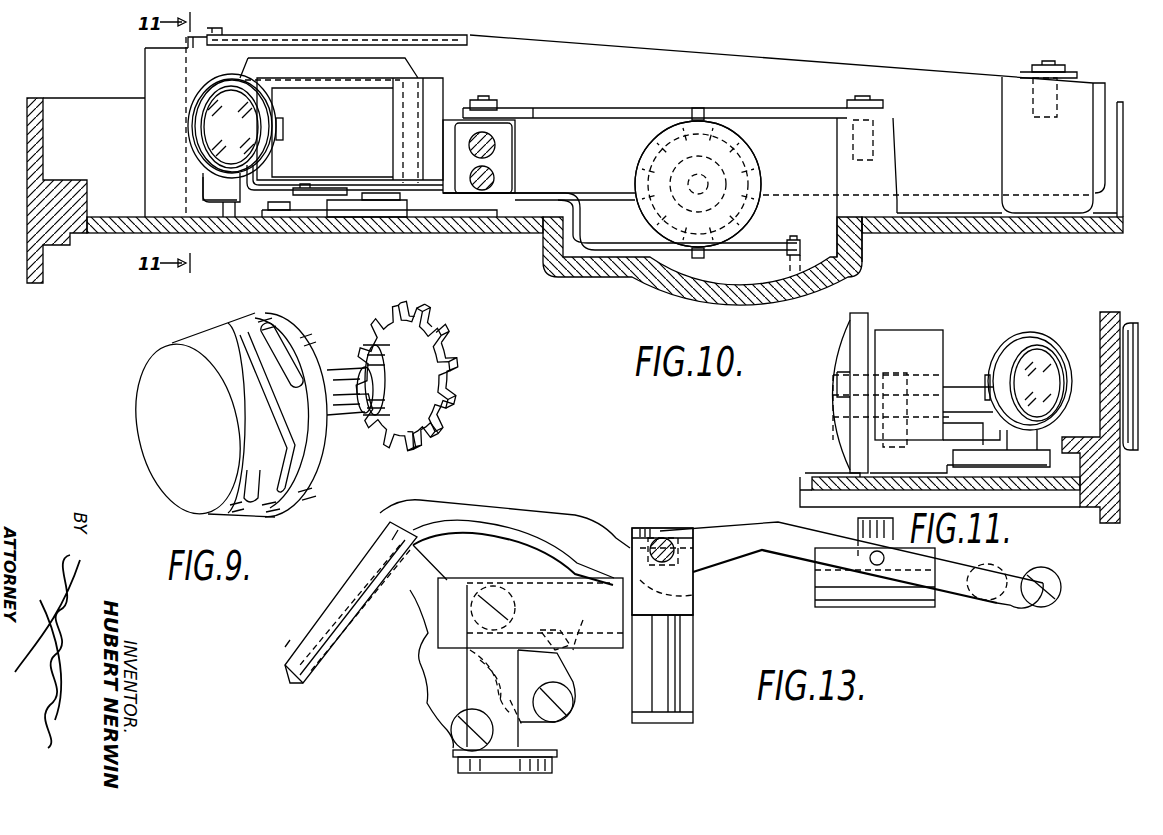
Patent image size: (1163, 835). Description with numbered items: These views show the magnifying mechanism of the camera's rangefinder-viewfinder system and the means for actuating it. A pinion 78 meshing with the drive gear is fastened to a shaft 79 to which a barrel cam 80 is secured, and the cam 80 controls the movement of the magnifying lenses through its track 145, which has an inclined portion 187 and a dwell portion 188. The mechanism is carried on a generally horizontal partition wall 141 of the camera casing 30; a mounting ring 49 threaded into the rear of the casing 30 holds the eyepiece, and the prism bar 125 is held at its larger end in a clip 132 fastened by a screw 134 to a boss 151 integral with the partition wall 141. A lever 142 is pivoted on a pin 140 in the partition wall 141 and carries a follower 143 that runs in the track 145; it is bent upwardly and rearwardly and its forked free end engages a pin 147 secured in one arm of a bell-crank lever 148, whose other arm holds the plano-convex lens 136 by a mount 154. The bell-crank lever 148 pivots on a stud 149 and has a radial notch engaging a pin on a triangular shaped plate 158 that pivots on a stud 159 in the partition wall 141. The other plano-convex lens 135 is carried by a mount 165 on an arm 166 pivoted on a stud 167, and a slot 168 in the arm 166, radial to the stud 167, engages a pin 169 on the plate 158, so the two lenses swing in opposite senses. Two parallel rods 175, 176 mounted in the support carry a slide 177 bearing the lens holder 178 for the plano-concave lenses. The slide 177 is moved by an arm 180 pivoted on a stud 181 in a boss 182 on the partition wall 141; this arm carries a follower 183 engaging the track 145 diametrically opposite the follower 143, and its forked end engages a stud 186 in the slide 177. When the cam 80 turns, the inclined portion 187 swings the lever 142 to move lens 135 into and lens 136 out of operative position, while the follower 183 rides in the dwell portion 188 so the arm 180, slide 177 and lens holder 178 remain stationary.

In FIG. 10, the camera casing 30 is at (55, 240).
In FIG. 11, the camera casing 30 is at (1093, 500).
In FIG. 11, the mounting ring 49 is at (1133, 320).
In FIG. 10, the pinion 78 is at (742, 138).
In FIG. 9, the pinion 78 is at (425, 340).
In FIG. 10, the shaft 79 is at (698, 178).
In FIG. 9, the shaft 79 is at (338, 372).
In FIG. 13, the shaft 79 is at (858, 530).
In FIG. 10, the barrel cam 80 is at (758, 172).
In FIG. 9, the barrel cam 80 is at (198, 498).
In FIG. 13, the barrel cam 80 is at (815, 598).
In FIG. 10, the prism bar 125 is at (788, 62).
In FIG. 10, the clip 132 is at (1022, 72).
In FIG. 10, the screw 134 is at (1060, 70).
In FIG. 11, the plano-convex lens 135 is at (835, 355).
In FIG. 13, the plano-convex lens 135 is at (312, 613).
In FIG. 10, the plano-convex lens 136 is at (212, 140).
In FIG. 11, the plano-convex lens 136 is at (1045, 360).
In FIG. 10, the pin 140 is at (818, 244).
In FIG. 13, the pin 140 is at (1002, 572).
In FIG. 10, the partition wall 141 is at (843, 262).
In FIG. 11, the partition wall 141 is at (815, 483).
In FIG. 10, the lever 142 is at (752, 256).
In FIG. 13, the lever 142 is at (780, 525).
In FIG. 10, the follower 143 is at (690, 249).
In FIG. 9, the cam track 145 is at (253, 502).
In FIG. 10, the pin 147 is at (484, 203).
In FIG. 10, the bell-crank lever 148 is at (230, 192).
In FIG. 11, the bell-crank lever 148 is at (990, 445).
In FIG. 13, the bell-crank lever 148 is at (583, 620).
In FIG. 10, the stud 149 is at (323, 188).
In FIG. 13, the stud 149 is at (505, 580).
In FIG. 10, the boss 151 is at (1018, 160).
In FIG. 10, the mount 154 is at (230, 80).
In FIG. 11, the mount 154 is at (1020, 340).
In FIG. 13, the mount 154 is at (557, 763).
In FIG. 10, the triangular shaped plate 158 is at (382, 217).
In FIG. 13, the triangular shaped plate 158 is at (574, 684).
In FIG. 10, the stud 159 is at (368, 193).
In FIG. 13, the stud 159 is at (572, 705).
In FIG. 11, the mount 165 is at (862, 325).
In FIG. 13, the mount 165 is at (310, 680).
In FIG. 13, the arm 166 is at (418, 595).
In FIG. 10, the stud 167 is at (282, 200).
In FIG. 13, the stud 167 is at (458, 735).
In FIG. 13, the slot 168 is at (520, 725).
In FIG. 13, the pin 169 is at (520, 665).
In FIG. 10, the rod 175 is at (496, 145).
In FIG. 11, the rod 175 is at (953, 387).
In FIG. 13, the rod 175 is at (665, 685).
In FIG. 10, the rod 176 is at (496, 178).
In FIG. 10, the slide 177 is at (515, 158).
In FIG. 11, the slide 177 is at (890, 373).
In FIG. 13, the slide 177 is at (690, 602).
In FIG. 10, the lens holder 178 is at (432, 82).
In FIG. 11, the lens holder 178 is at (928, 333).
In FIG. 13, the lens holder 178 is at (592, 645).
In FIG. 10, the arm 180 is at (764, 113).
In FIG. 13, the arm 180 is at (797, 552).
In FIG. 10, the stud 181 is at (877, 108).
In FIG. 13, the stud 181 is at (1060, 585).
In FIG. 10, the boss 182 is at (887, 154).
In FIG. 10, the follower 183 is at (690, 119).
In FIG. 10, the stud 186 is at (490, 105).
In FIG. 13, the stud 186 is at (665, 540).
In FIG. 9, the inclined portion 187 is at (277, 430).
In FIG. 9, the dwell portion 188 is at (272, 340).